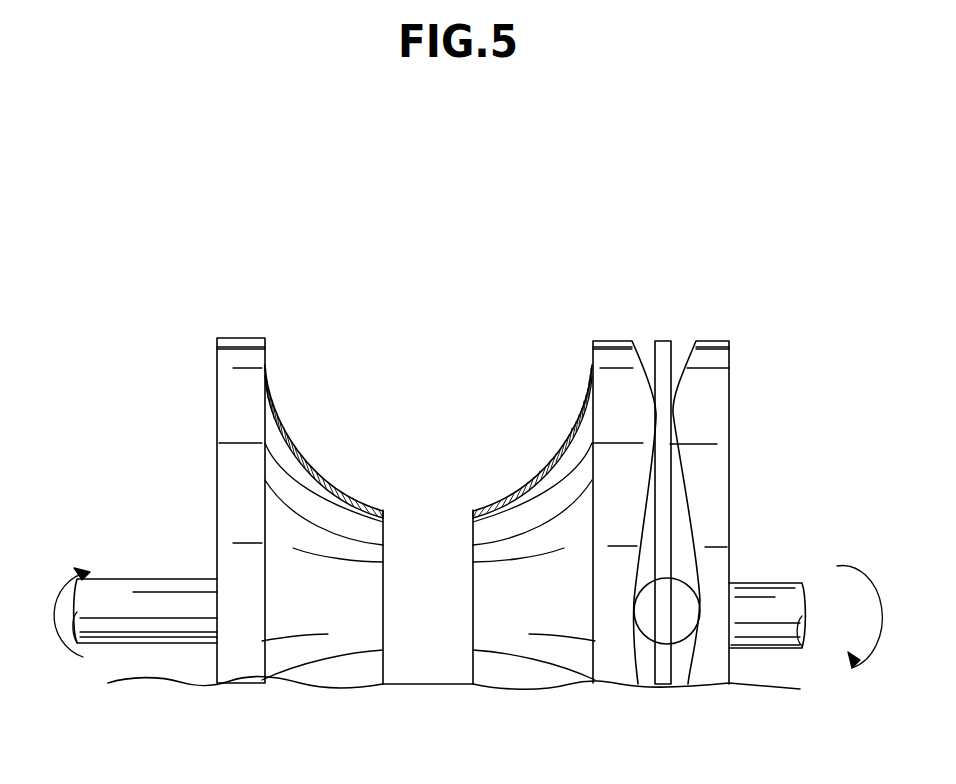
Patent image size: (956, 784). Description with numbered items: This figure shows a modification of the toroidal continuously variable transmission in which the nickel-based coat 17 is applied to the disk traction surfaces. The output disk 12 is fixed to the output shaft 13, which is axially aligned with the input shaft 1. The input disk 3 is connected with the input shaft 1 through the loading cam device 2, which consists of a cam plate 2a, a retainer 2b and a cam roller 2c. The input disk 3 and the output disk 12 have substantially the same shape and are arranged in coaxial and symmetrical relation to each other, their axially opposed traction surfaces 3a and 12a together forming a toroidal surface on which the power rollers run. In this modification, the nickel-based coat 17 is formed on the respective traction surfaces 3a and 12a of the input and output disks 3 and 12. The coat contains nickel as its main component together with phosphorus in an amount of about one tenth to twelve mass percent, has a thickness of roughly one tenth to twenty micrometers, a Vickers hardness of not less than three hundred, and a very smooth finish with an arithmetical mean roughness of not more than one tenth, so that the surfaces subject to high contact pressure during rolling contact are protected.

The input shaft 1 is at (783, 583).
The loading cam device 2 is at (760, 348).
The cam plate 2a is at (717, 341).
The retainer 2b is at (665, 341).
The cam roller 2c is at (676, 580).
The input disk 3 is at (612, 341).
The traction surface 3a is at (473, 510).
The output disk 12 is at (242, 338).
The traction surface 12a is at (383, 510).
The output shaft 13 is at (147, 579).
The nickel-based coat 17 is at (310, 455).